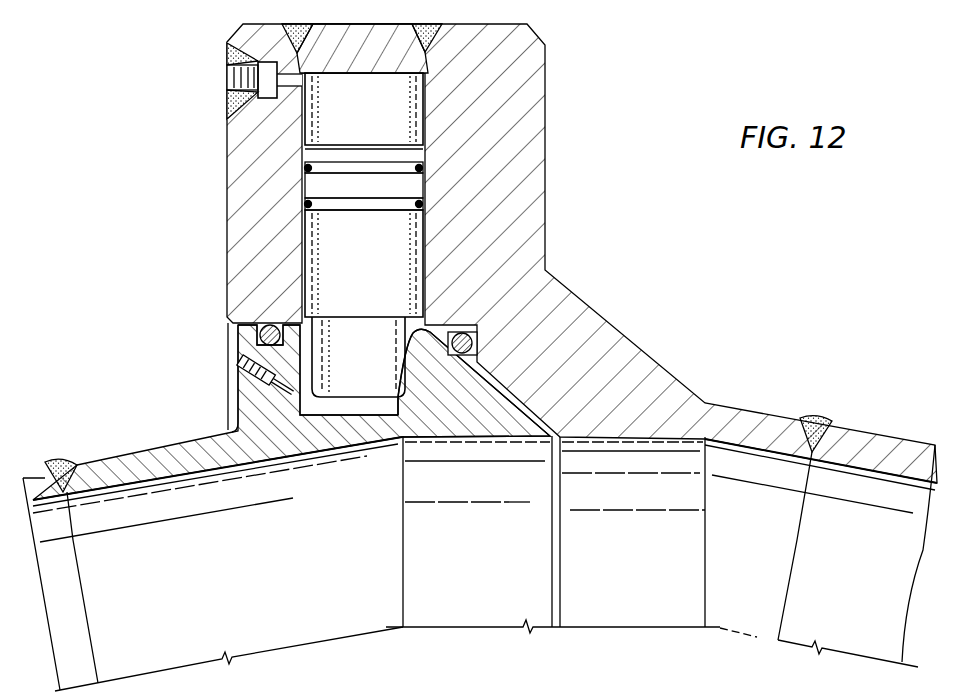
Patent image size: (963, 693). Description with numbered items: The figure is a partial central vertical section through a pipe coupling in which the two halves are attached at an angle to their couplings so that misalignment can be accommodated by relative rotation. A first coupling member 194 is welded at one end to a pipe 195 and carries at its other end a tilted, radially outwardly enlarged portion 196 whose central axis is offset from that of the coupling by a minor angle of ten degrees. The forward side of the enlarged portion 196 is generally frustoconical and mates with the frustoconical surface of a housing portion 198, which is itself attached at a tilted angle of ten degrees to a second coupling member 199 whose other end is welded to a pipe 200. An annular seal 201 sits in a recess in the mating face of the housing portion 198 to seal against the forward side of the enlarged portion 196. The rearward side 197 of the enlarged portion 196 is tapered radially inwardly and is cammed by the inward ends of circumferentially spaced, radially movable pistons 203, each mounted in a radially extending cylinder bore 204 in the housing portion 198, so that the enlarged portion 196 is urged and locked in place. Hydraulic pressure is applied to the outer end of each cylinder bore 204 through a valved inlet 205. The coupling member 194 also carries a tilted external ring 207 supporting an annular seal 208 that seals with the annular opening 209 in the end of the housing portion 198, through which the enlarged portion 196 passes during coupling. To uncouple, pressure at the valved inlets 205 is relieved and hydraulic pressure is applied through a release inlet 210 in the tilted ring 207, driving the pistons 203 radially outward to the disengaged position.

The first coupling member 194 is at (110, 455).
The pipe 195 is at (35, 472).
The enlarged portion 196 is at (473, 422).
The rearward side 197 is at (402, 392).
The housing portion 198 is at (508, 270).
The second coupling member 199 is at (740, 412).
The pipe 200 is at (888, 437).
The annular seal 201 is at (478, 338).
The piston 203 is at (405, 245).
The cylinder bore 204 is at (418, 92).
The valved inlet 205 is at (232, 72).
The tilted external ring 207 is at (238, 416).
The annular seal 208 is at (260, 343).
The annular opening 209 is at (247, 326).
The release inlet 210 is at (240, 375).